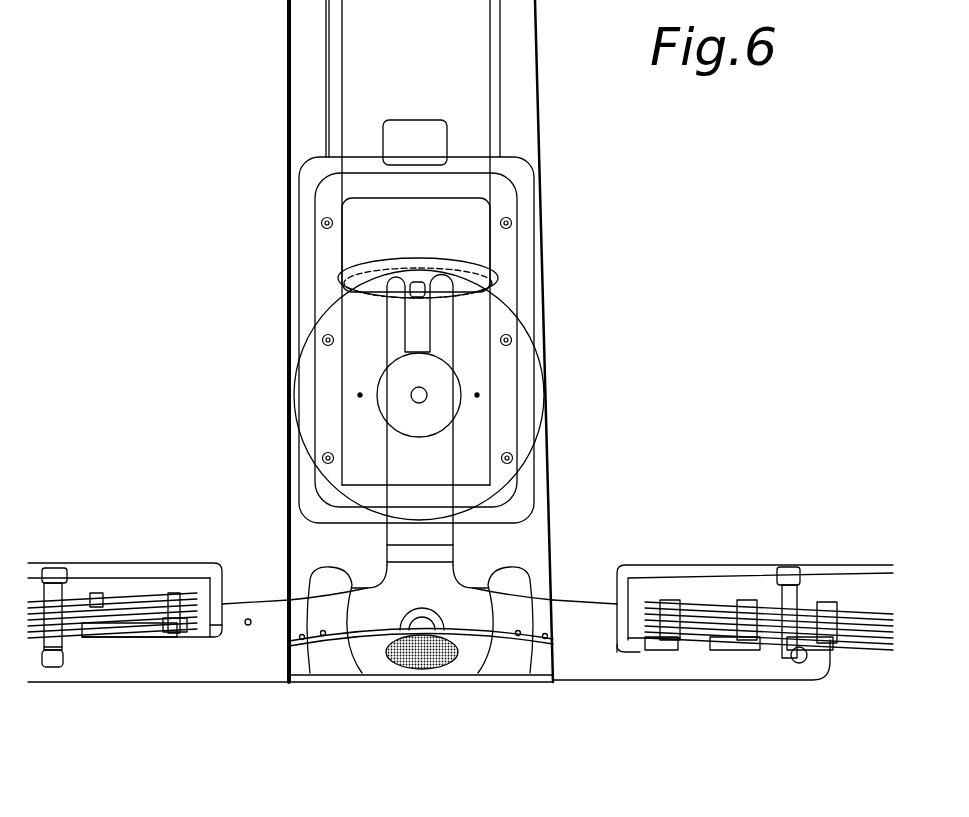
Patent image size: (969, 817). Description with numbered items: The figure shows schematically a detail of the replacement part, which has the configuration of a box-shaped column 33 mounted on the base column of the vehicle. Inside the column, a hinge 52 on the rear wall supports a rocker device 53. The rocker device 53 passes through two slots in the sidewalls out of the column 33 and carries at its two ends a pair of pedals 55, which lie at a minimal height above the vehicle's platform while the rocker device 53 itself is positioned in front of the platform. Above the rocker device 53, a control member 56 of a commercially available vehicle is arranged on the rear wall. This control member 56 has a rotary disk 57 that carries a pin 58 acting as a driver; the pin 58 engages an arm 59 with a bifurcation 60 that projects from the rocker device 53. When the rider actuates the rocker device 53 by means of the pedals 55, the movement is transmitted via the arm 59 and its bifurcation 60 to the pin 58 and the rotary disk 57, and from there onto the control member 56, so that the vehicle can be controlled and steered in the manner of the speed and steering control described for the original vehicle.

The box-shaped column 33 is at (313, 117).
The hinge 52 is at (422, 627).
The rocker device 53 is at (255, 650).
The pedals 55 is at (131, 588).
The control member 56 is at (312, 290).
The rotary disk 57 is at (505, 315).
The pin 58 is at (413, 282).
The arm 59 is at (430, 469).
The bifurcation 60 is at (418, 322).